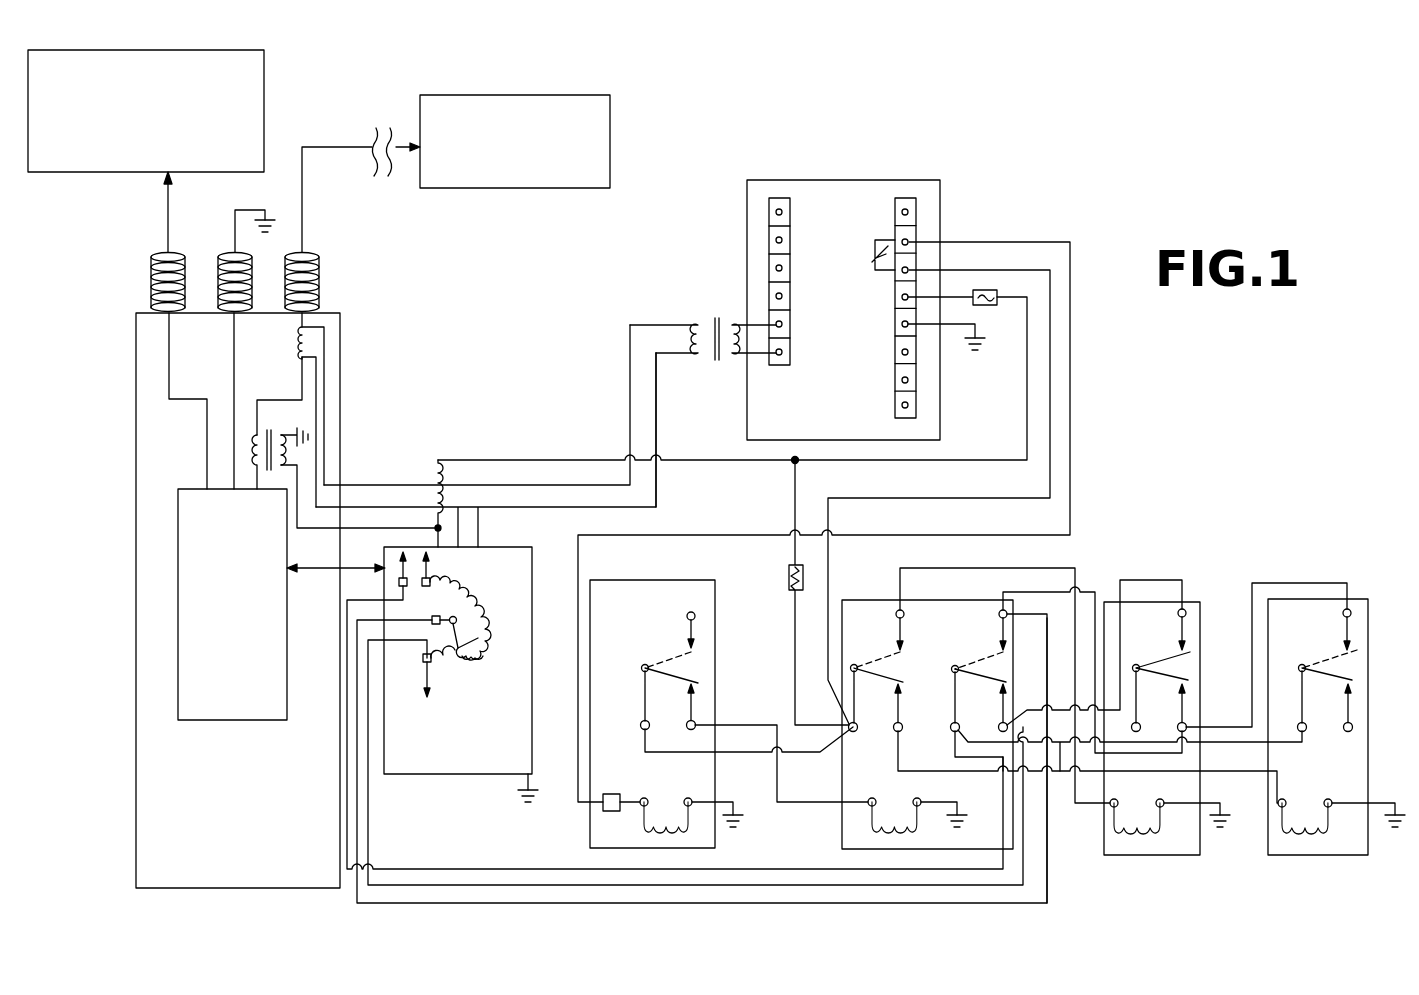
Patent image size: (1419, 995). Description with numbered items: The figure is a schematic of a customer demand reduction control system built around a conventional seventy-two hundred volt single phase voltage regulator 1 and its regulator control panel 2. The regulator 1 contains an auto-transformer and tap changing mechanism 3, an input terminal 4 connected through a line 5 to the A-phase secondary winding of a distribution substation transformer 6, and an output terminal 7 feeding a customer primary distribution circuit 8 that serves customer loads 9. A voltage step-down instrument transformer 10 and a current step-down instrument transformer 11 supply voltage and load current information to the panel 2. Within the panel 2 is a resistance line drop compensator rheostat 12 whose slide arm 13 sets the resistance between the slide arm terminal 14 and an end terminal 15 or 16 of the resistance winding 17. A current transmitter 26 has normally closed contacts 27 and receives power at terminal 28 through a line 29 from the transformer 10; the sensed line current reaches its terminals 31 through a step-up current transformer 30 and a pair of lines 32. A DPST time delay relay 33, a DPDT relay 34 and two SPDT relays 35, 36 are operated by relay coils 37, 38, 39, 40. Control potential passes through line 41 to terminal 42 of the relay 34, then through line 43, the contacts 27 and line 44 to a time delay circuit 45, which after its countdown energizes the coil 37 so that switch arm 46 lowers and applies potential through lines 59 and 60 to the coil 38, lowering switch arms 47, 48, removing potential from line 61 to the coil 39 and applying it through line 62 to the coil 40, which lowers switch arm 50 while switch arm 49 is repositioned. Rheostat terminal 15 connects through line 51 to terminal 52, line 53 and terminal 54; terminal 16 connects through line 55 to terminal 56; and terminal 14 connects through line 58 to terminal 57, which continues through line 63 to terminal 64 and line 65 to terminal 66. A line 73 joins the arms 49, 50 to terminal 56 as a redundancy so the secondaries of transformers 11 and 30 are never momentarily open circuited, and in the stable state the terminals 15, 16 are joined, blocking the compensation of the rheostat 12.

The single phase voltage regulator 1 is at (262, 600).
The regulator control panel 2 is at (440, 681).
The tap changing mechanism 3 is at (178, 568).
The input terminal 4 is at (150, 286).
The line 5 is at (168, 215).
The distribution substation transformer 6 is at (178, 50).
The output terminal 7 is at (320, 262).
The customer primary distribution circuit 8 is at (318, 147).
The customer loads 9 is at (500, 95).
The voltage step-down instrument transformer 10 is at (270, 430).
The current step-down instrument transformer 11 is at (310, 340).
The resistance line drop compensator rheostat 12 is at (467, 660).
The slide arm 13 is at (484, 640).
The slide arm terminal 14 is at (437, 614).
The end terminal 15 is at (430, 672).
The end terminal 16 is at (400, 578).
The rheostat resistance winding 17 is at (488, 603).
The current transmitter 26 is at (872, 288).
The normally closed contacts 27 is at (867, 256).
The terminal 28 is at (895, 298).
The line 29 is at (440, 465).
The step-up current transformer 30 is at (714, 320).
The terminals 31 is at (790, 327).
The lines 32 is at (656, 405).
The DPST time delay relay 33 is at (645, 695).
The DPDT relay 34 is at (944, 737).
The SPDT relay 35 is at (1175, 704).
The SPDT relay 36 is at (1336, 705).
The relay coil 37 is at (691, 801).
The relay coil 38 is at (917, 803).
The relay coil 39 is at (1170, 803).
The relay coil 40 is at (1341, 803).
The line 41 is at (795, 628).
The terminal 42 is at (858, 732).
The line 43 is at (830, 590).
The line 44 is at (1070, 400).
The time delay circuit 45 is at (605, 810).
The switch arm 46 is at (670, 678).
The switch arm 47 is at (868, 678).
The switch arm 48 is at (980, 669).
The switch arm 49 is at (1183, 642).
The switch arm 50 is at (1325, 680).
The line 51 is at (432, 885).
The terminal 52 is at (997, 722).
The line 53 is at (1120, 585).
The terminal 54 is at (1185, 609).
The line 55 is at (502, 868).
The terminal 56 is at (950, 723).
The terminal 57 is at (1000, 612).
The line 58 is at (540, 904).
The line 59 is at (770, 748).
The line 60 is at (775, 722).
The line 61 is at (920, 568).
The line 62 is at (944, 772).
The line 63 is at (1097, 590).
The terminal 64 is at (1177, 726).
The line 65 is at (1228, 724).
The terminal 66 is at (1340, 616).
The line 73 is at (1060, 775).